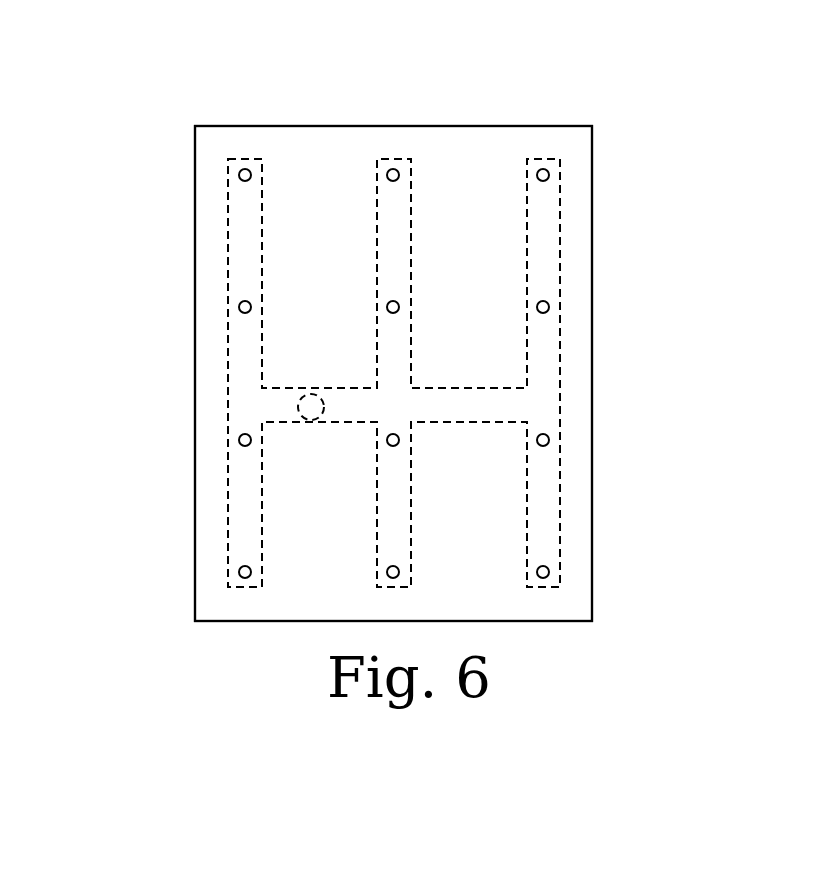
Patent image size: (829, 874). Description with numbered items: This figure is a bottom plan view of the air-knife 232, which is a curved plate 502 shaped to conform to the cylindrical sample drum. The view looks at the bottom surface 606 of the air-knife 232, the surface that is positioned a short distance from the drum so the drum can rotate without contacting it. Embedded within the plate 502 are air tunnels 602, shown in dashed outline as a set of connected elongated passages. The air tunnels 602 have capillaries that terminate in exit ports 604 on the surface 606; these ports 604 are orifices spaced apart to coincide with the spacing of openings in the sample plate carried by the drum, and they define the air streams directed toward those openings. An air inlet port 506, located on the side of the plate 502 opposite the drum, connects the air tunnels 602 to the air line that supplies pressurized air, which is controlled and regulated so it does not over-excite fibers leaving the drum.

The air-knife 232 is at (528, 126).
The curved plate 502 is at (195, 264).
The air tunnels 602 is at (228, 366).
The exit ports 604 is at (239, 439).
The air inlet port 506 is at (312, 420).
The bottom surface 606 is at (340, 277).